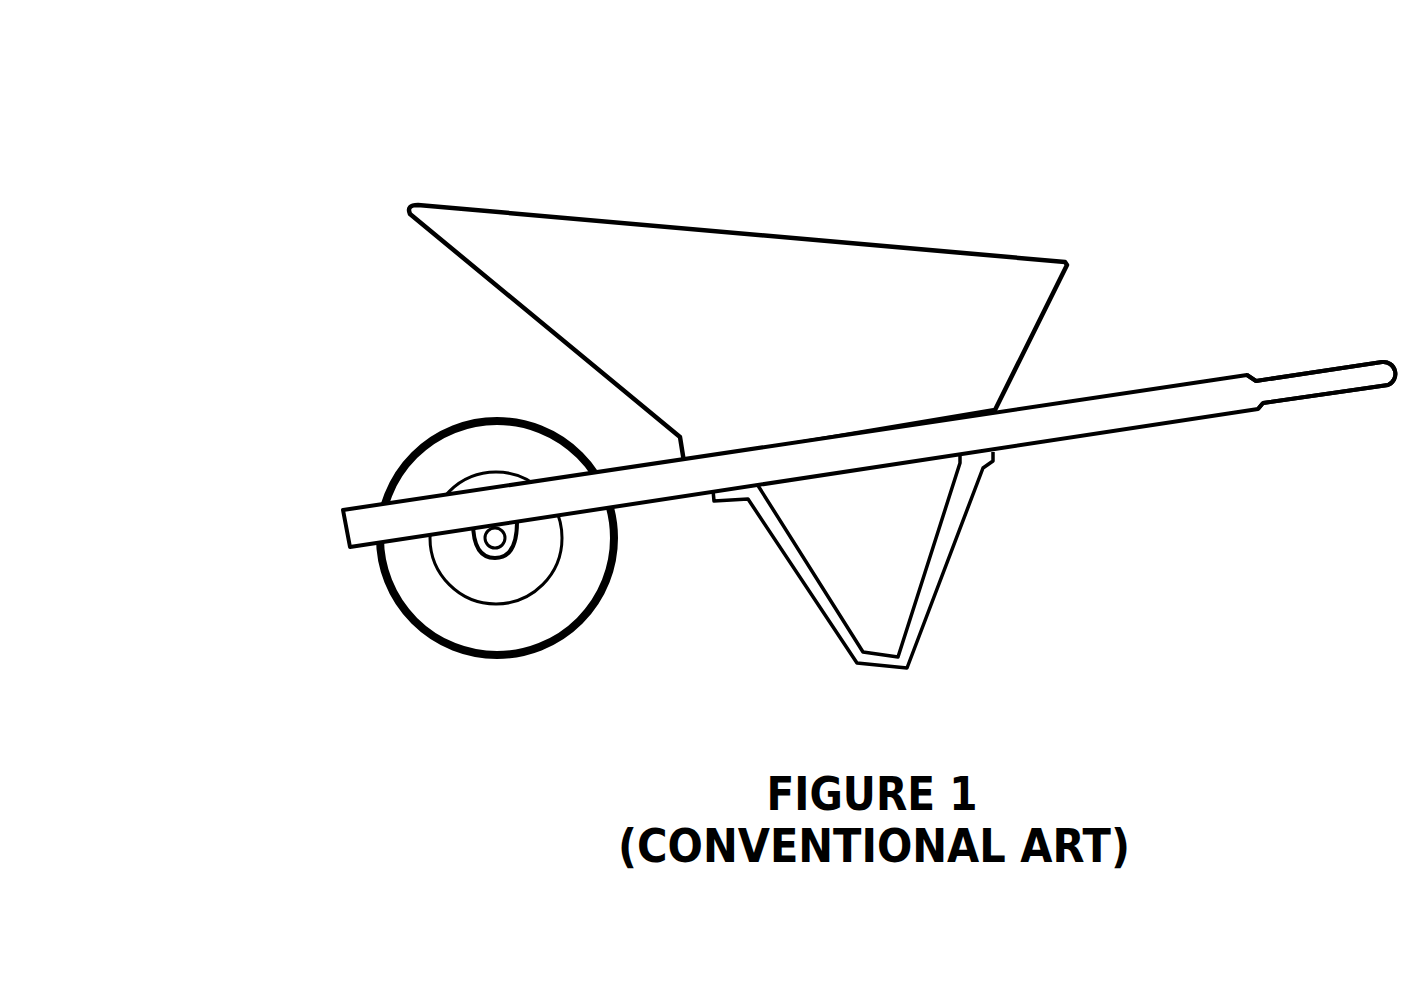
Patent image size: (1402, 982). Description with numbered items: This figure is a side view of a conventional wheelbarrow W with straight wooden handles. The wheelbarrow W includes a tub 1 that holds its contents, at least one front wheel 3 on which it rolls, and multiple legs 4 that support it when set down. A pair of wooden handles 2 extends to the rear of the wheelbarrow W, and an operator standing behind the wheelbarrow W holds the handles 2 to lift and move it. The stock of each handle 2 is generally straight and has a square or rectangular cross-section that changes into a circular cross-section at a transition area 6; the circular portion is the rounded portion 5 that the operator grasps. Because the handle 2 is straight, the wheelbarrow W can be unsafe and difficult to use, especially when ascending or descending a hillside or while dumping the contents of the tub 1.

The wheelbarrow W is at (492, 284).
The tub 1 is at (470, 207).
The wooden handle 2 is at (1120, 395).
The front wheel 3 is at (387, 482).
The leg 4 is at (812, 593).
The rounded portion 5 is at (1318, 368).
The transition area 6 is at (1262, 408).